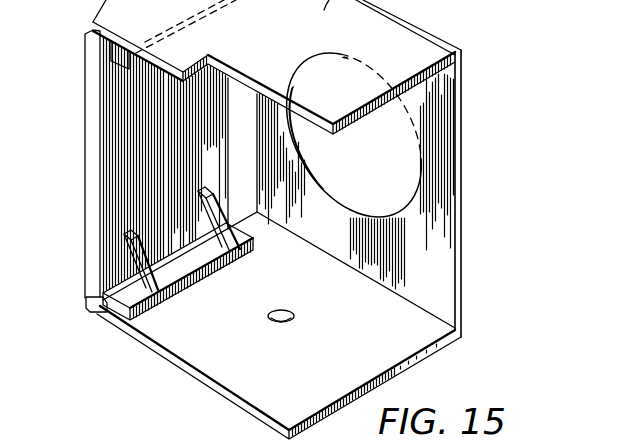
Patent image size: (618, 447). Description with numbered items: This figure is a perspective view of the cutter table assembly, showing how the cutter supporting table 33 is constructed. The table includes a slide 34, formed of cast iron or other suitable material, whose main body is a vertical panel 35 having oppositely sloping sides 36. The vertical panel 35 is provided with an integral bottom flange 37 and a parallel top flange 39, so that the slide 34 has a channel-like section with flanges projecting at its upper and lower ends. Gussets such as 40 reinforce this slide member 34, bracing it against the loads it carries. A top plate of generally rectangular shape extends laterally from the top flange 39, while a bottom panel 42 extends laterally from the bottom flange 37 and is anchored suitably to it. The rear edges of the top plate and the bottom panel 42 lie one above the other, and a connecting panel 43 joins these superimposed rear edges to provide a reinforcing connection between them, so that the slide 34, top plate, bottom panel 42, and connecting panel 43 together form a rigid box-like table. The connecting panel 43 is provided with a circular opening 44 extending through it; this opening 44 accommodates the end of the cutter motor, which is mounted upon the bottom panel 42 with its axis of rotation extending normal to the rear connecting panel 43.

The cutter supporting table 33 is at (193, 372).
The slide 34 is at (130, 193).
The vertical panel 35 is at (118, 152).
The oppositely sloping sides 36 is at (95, 97).
The bottom flange 37 is at (107, 308).
The top flange 39 is at (116, 48).
The gussets 40 is at (157, 264).
The bottom panel 42 is at (356, 371).
The connecting panel 43 is at (430, 238).
The circular opening 44 is at (420, 152).